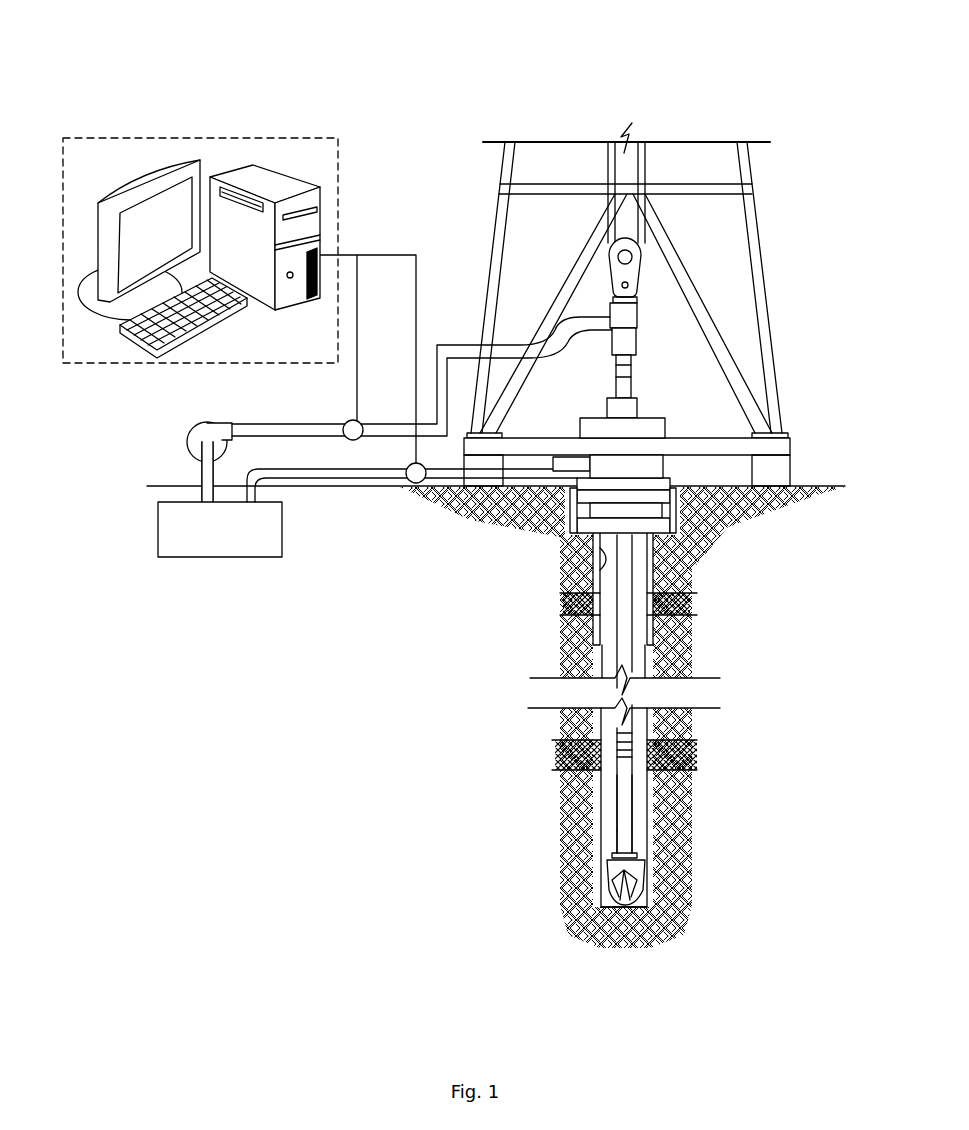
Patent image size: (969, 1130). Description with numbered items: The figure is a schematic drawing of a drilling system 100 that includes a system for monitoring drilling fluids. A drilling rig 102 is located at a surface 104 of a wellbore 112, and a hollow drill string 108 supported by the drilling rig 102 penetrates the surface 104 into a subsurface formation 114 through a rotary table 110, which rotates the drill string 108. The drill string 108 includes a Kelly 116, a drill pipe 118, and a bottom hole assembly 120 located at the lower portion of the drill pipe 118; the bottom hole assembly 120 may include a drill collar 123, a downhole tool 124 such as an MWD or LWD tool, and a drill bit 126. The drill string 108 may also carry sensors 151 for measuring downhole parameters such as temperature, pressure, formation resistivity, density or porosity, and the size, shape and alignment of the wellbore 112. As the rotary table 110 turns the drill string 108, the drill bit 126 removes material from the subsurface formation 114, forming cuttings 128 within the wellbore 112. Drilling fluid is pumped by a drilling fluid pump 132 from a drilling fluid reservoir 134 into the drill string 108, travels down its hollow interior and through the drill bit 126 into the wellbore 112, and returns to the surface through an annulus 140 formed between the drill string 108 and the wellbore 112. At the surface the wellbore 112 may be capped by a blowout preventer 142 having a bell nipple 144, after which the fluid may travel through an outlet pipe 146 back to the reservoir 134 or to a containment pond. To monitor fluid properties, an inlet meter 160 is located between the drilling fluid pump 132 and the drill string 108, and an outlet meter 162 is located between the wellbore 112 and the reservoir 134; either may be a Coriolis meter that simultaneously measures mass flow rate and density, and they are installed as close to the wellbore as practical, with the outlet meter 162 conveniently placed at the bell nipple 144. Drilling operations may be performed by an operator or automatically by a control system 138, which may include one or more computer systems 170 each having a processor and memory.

The drilling system 100 is at (360, 58).
The drilling rig 102 is at (762, 252).
The surface 104 is at (802, 485).
The drill string 108 is at (634, 568).
The rotary table 110 is at (593, 417).
The wellbore 112 is at (590, 582).
The subsurface formation 114 is at (752, 573).
The Kelly 116 is at (633, 372).
The drill pipe 118 is at (622, 652).
The bottom hole assembly 120 is at (497, 712).
The drill collar 123 is at (623, 835).
The downhole tool 124 is at (623, 753).
The drill bit 126 is at (600, 873).
The cuttings 128 is at (640, 907).
The drilling fluid pump 132 is at (197, 425).
The drilling fluid reservoir 134 is at (158, 528).
The control system 138 is at (338, 220).
The annulus 140 is at (640, 835).
The blowout preventer 142 is at (588, 502).
The bell nipple 144 is at (567, 463).
The outlet pipe 146 is at (358, 475).
The sensors 151 is at (630, 795).
The inlet meter 160 is at (353, 422).
The outlet meter 162 is at (415, 480).
The computer system 170 is at (150, 170).